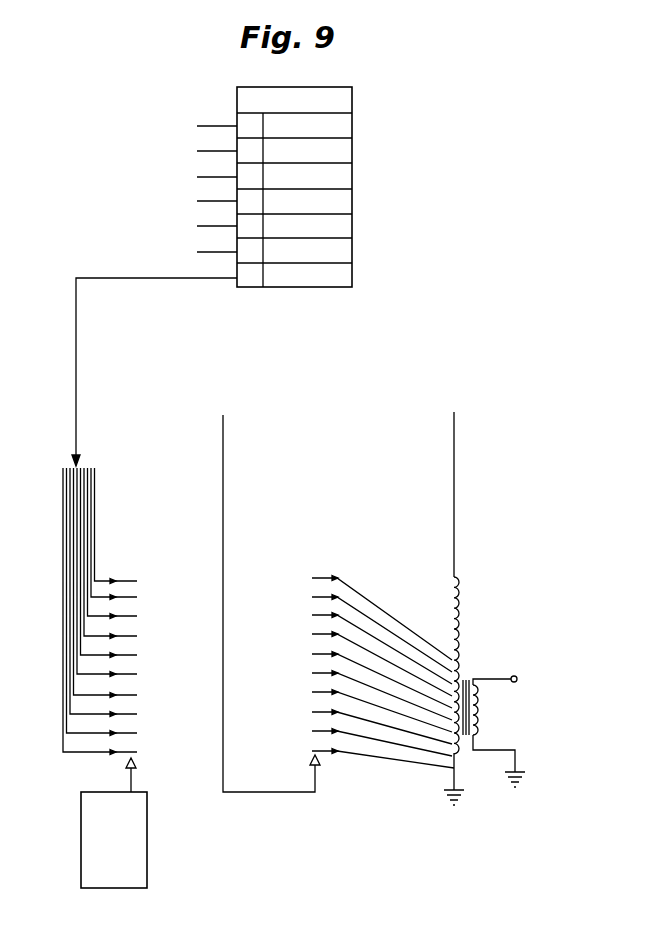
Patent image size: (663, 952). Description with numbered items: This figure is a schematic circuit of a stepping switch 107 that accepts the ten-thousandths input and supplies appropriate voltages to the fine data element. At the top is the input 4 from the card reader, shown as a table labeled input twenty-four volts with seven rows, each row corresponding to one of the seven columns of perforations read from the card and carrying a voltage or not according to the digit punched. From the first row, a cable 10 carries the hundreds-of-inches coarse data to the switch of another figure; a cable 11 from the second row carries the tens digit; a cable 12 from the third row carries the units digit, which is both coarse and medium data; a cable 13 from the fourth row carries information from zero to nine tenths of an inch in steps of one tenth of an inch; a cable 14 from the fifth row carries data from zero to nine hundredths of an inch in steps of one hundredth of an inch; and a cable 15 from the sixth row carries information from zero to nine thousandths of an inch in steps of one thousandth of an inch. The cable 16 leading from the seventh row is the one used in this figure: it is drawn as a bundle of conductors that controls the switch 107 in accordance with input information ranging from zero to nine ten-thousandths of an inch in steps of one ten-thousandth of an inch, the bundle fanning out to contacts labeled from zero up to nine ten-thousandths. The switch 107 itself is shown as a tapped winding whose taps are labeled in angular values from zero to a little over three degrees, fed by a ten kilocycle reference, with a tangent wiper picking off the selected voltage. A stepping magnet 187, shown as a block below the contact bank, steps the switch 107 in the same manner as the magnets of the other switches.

The input from the card reader 4 is at (317, 87).
The cable 10 is at (214, 126).
The cable 11 is at (214, 151).
The cable 12 is at (214, 177).
The cable 13 is at (214, 201).
The cable 14 is at (214, 226).
The cable 15 is at (214, 252).
The cable 16 is at (197, 278).
The stepping switch 107 is at (326, 453).
The stepping magnet 187 is at (114, 823).